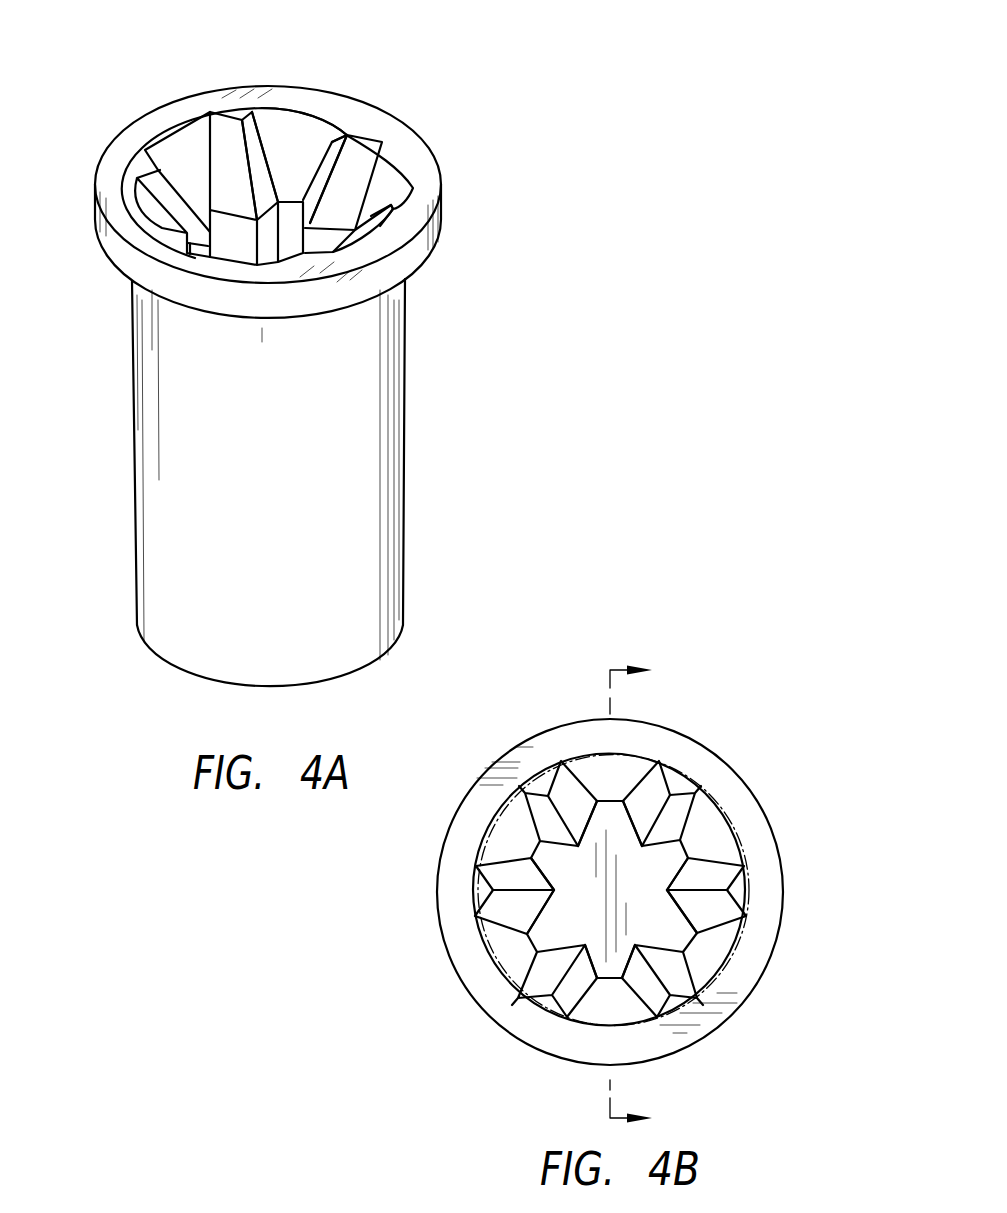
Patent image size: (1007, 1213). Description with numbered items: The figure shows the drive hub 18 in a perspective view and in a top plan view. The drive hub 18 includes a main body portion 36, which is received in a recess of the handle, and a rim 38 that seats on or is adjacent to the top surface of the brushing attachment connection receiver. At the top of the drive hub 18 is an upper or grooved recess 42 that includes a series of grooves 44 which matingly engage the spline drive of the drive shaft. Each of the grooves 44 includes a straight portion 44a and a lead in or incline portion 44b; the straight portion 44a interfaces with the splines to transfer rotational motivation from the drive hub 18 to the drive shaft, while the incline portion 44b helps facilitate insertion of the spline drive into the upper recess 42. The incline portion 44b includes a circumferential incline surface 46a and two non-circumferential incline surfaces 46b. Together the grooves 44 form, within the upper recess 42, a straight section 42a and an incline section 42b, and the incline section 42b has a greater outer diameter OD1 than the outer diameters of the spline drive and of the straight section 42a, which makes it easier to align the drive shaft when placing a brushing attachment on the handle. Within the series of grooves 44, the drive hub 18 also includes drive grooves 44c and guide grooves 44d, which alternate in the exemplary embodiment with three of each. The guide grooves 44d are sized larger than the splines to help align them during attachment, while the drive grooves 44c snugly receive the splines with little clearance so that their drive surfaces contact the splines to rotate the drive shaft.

In FIG. 4A, the drive hub 18 is at (570, 235).
In FIG. 4B, the drive hub 18 is at (740, 679).
In FIG. 4A, the main body portion 36 is at (372, 558).
In FIG. 4A, the rim 38 is at (410, 260).
In FIG. 4B, the upper or grooved recess 42 is at (652, 892).
In FIG. 4A, the straight section 42a is at (234, 249).
In FIG. 4A, the incline section 42b is at (396, 172).
In FIG. 4A, the grooves 44 is at (170, 148).
In FIG. 4B, the grooves 44 is at (542, 925).
In FIG. 4A, the straight portion 44a is at (207, 216).
In FIG. 4A, the lead in or incline portion 44b is at (196, 132).
In FIG. 4B, the drive grooves 44c is at (552, 857).
In FIG. 4B, the guide grooves 44d is at (610, 812).
In FIG. 4A, the circumferential incline surface 46a is at (299, 130).
In FIG. 4A, the non-circumferential incline surfaces 46b is at (255, 130).
In FIG. 4B, the outer diameter of the incline section OD1 is at (695, 795).